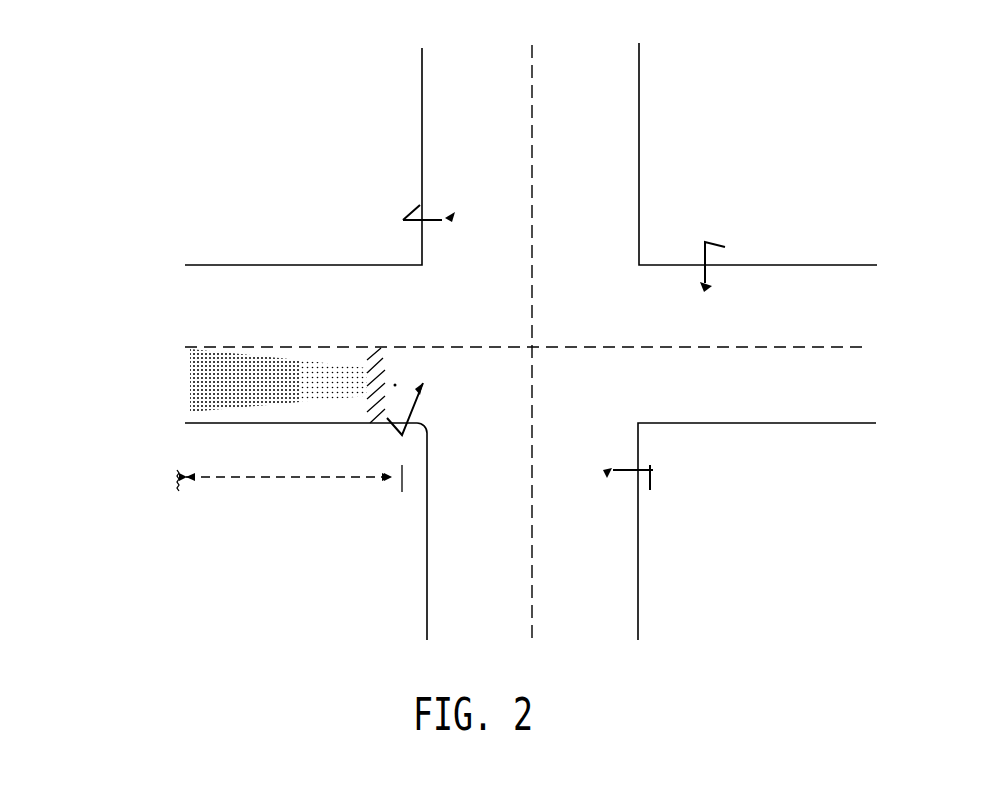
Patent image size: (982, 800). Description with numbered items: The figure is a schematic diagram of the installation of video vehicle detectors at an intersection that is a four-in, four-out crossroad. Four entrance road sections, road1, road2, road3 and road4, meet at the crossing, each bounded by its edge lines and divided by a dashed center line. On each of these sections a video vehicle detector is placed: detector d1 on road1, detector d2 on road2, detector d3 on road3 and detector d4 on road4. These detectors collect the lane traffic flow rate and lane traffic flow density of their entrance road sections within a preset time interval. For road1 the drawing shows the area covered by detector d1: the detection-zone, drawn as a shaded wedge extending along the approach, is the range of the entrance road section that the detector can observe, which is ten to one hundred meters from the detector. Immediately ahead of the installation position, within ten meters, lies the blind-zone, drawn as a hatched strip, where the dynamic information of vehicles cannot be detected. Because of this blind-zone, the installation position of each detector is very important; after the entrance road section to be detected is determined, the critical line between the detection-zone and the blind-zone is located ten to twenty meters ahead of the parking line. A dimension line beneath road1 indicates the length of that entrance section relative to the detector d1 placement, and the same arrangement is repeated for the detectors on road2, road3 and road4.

The video vehicle detector d1 is at (405, 420).
The video vehicle detector d2 is at (412, 228).
The video vehicle detector d3 is at (697, 264).
The video vehicle detector d4 is at (654, 477).
The entrance road section road1 is at (289, 476).
The entrance road section road2 is at (531, 154).
The entrance road section road3 is at (765, 301).
The entrance road section road4 is at (530, 531).
The blind zone blind-zone is at (320, 380).
The detection zone detection-zone is at (245, 375).